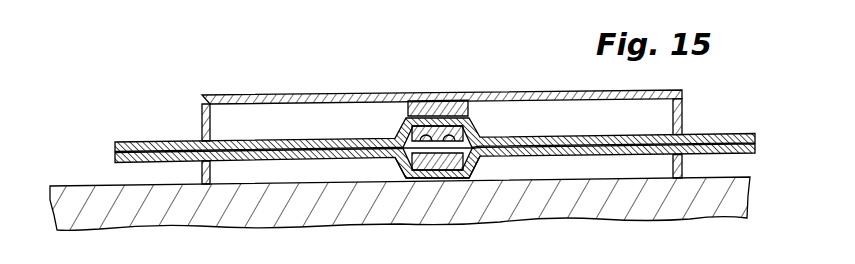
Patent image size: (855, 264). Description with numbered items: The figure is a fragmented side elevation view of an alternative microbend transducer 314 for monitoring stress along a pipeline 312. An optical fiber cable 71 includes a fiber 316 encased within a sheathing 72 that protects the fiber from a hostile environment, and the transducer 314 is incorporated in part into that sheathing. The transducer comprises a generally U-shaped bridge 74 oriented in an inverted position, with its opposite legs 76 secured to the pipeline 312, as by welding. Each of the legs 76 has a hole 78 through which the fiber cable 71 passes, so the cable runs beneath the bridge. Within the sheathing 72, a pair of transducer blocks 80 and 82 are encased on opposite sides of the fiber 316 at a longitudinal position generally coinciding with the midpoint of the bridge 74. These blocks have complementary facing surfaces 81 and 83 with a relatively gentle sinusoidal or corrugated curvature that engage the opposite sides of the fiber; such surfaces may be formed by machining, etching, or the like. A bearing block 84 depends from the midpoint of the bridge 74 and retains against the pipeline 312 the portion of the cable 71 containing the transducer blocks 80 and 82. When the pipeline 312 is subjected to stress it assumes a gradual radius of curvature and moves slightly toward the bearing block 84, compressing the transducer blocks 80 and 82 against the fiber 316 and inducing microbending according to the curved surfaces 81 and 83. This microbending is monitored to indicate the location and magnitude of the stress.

The microbend transducer 314 is at (262, 79).
The optical fiber cable 71 is at (358, 129).
The sheathing 72 is at (246, 142).
The bridge 74 is at (530, 92).
The legs 76 is at (202, 114).
The holes 78 is at (202, 165).
The transducer block 80 is at (450, 168).
The facing surface 81 is at (393, 180).
The transducer block 82 is at (452, 100).
The facing surface 83 is at (463, 134).
The bearing block 84 is at (425, 100).
The pipeline 312 is at (633, 205).
The fiber 316 is at (425, 144).